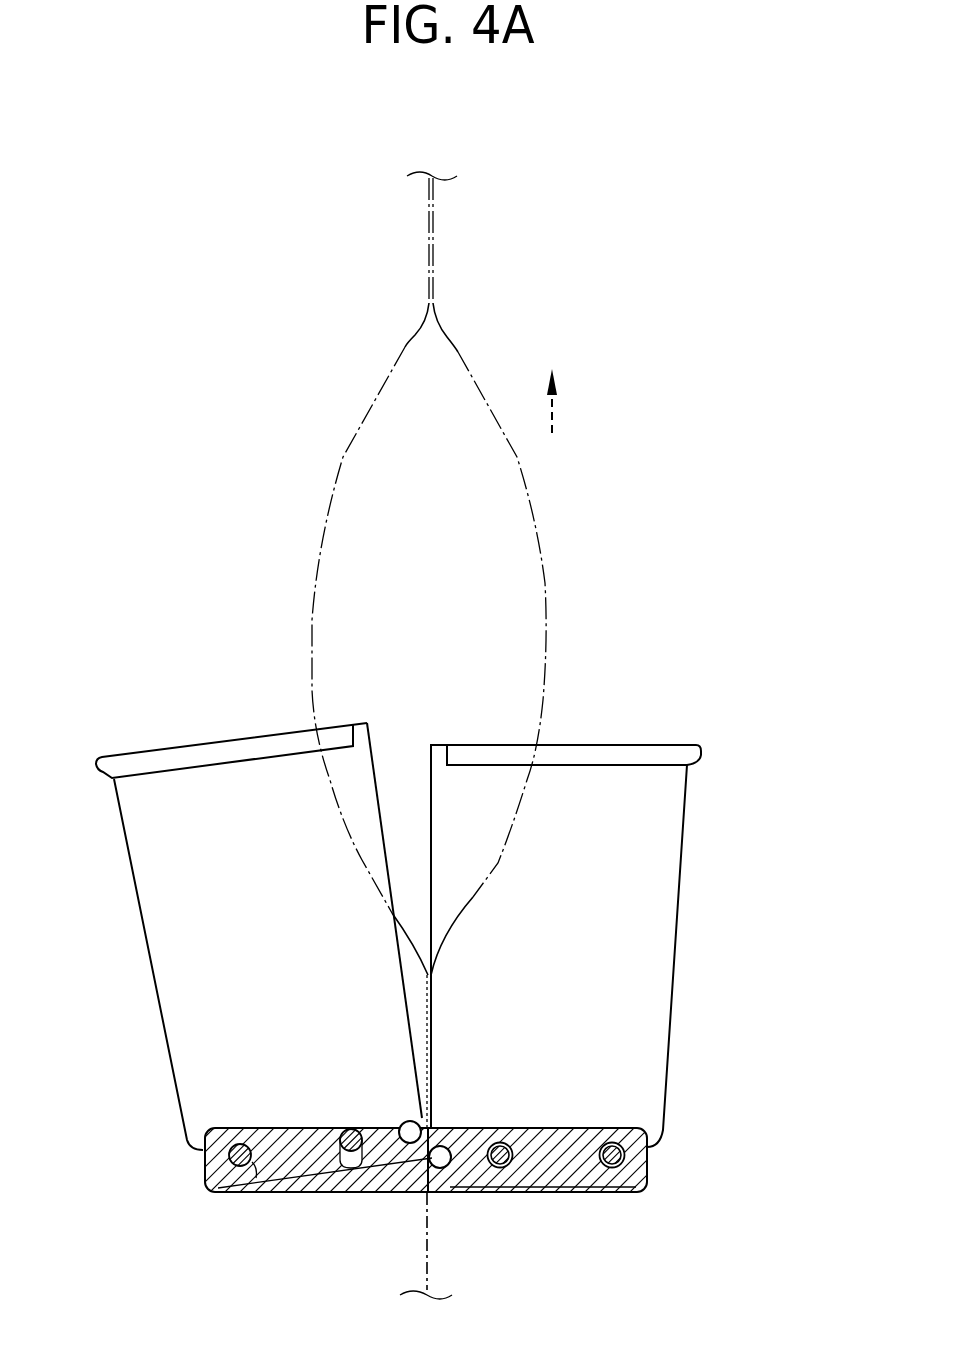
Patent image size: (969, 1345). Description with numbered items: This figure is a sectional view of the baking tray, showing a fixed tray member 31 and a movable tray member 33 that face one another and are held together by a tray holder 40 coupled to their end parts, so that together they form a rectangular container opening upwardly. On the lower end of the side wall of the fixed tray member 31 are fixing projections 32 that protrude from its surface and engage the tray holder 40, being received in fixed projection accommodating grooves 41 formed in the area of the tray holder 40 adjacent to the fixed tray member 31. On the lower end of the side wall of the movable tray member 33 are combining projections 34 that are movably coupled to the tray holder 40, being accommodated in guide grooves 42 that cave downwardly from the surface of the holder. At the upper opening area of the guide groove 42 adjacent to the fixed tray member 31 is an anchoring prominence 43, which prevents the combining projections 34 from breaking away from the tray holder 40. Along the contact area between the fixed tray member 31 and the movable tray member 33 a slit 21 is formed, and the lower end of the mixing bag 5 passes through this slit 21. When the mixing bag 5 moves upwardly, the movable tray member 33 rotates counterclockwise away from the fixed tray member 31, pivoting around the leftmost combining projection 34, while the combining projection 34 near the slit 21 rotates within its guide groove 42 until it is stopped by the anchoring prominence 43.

The mixing bag 5 is at (548, 585).
The slit 21 is at (428, 1125).
The fixed tray member 31 is at (672, 978).
The fixing projections 32 is at (503, 1170).
The movable tray member 33 is at (156, 978).
The combining projections 34 is at (242, 1168).
The tray holders 40 is at (562, 1193).
The fixed projection accommodating grooves 41 is at (498, 1131).
The guide grooves 42 is at (262, 1170).
The anchoring prominence 43 is at (349, 1129).